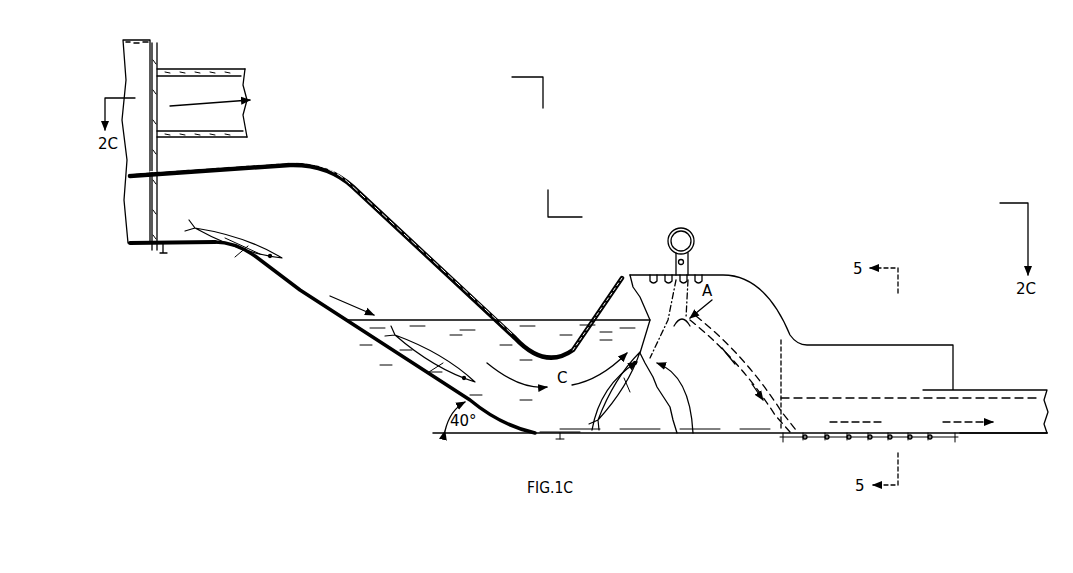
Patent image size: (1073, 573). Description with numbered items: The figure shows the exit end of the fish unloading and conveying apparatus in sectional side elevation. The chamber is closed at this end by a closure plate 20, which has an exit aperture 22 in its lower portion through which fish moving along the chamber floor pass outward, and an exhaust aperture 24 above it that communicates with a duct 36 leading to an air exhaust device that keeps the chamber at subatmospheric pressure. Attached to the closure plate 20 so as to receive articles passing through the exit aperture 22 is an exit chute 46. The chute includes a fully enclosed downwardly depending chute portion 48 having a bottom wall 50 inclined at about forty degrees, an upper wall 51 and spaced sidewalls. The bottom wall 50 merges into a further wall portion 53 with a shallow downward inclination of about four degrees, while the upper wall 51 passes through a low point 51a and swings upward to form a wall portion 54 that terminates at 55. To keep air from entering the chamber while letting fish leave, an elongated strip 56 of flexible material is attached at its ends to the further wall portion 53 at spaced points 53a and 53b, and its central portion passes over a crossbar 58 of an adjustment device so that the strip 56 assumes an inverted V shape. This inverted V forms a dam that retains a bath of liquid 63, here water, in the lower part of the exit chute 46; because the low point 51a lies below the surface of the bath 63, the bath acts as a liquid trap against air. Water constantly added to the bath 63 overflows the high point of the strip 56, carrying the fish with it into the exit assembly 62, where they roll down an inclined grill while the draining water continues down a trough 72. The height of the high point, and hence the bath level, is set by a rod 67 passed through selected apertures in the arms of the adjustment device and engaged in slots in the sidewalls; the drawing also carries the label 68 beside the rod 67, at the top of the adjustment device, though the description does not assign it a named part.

The closure plate 20 is at (152, 58).
The exit aperture 22 is at (155, 222).
The exhaust aperture 24 is at (150, 113).
The duct 36 is at (205, 137).
The exit chute 46 is at (441, 263).
The downwardly depending chute portion 48 is at (319, 283).
The bottom wall 50 is at (378, 325).
The upper wall 51 is at (449, 281).
The low point 51a is at (556, 359).
The further wall portion 53 is at (736, 434).
The attachment point 53a is at (570, 433).
The attachment point 53b is at (869, 444).
The wall portion 54 is at (597, 319).
The termination 55 is at (625, 280).
The elongated strip of flexible material 56 is at (709, 329).
The crossbar 58 is at (688, 335).
The exit assembly 62 is at (866, 343).
The bath of liquid 63 is at (570, 420).
The rod 67 is at (685, 263).
The gate stem 68 is at (695, 278).
The trough 72 is at (1000, 435).